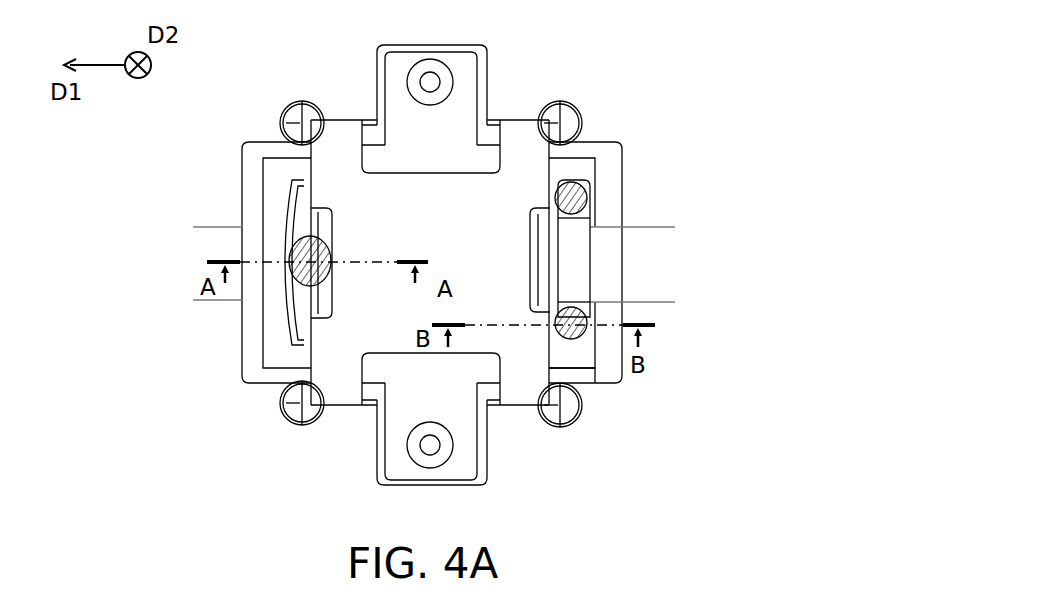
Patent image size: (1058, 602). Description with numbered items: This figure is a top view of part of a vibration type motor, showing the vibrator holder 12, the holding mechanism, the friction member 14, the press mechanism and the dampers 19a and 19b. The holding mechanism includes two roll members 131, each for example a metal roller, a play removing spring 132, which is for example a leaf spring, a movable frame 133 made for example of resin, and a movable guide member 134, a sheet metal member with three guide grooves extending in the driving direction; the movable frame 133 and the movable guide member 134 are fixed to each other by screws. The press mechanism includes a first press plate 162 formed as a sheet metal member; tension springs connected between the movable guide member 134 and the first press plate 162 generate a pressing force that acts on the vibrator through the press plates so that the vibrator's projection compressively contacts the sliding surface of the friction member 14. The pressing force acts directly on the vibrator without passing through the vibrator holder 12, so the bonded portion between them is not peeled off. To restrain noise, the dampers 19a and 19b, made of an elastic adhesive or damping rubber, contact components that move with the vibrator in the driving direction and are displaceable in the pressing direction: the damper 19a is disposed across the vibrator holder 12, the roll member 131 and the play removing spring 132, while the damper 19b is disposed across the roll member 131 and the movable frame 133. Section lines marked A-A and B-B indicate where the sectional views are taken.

The vibrator holder 12 is at (323, 294).
The friction member 14 is at (222, 243).
The damper 19a is at (306, 255).
The damper 19b is at (572, 198).
The roll member 131 is at (308, 198).
The play removing spring 132 is at (322, 291).
The movable frame 133 is at (273, 338).
The movable guide member 134 is at (602, 377).
The first press plate 162 is at (527, 166).